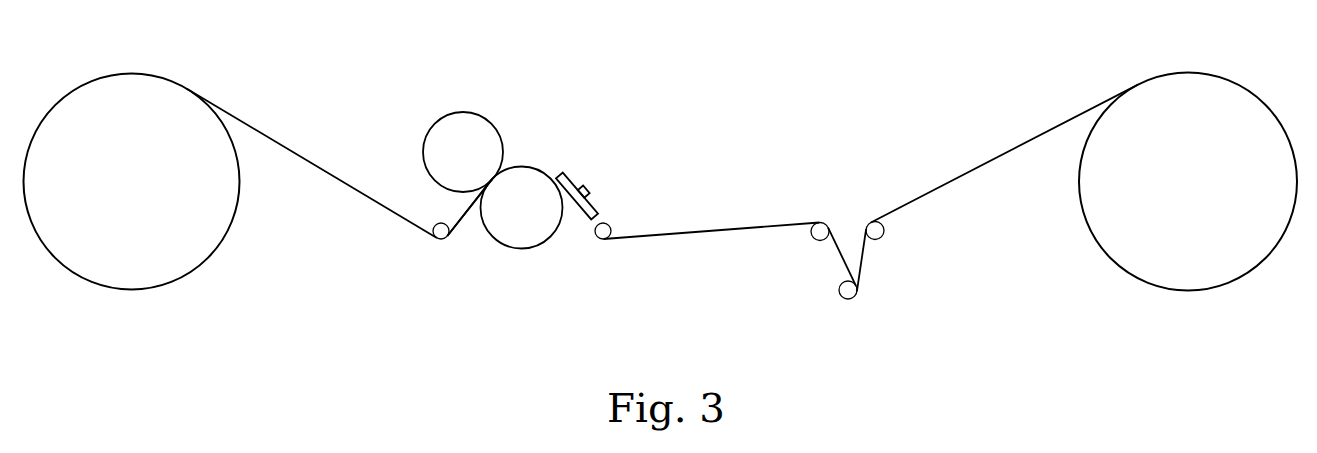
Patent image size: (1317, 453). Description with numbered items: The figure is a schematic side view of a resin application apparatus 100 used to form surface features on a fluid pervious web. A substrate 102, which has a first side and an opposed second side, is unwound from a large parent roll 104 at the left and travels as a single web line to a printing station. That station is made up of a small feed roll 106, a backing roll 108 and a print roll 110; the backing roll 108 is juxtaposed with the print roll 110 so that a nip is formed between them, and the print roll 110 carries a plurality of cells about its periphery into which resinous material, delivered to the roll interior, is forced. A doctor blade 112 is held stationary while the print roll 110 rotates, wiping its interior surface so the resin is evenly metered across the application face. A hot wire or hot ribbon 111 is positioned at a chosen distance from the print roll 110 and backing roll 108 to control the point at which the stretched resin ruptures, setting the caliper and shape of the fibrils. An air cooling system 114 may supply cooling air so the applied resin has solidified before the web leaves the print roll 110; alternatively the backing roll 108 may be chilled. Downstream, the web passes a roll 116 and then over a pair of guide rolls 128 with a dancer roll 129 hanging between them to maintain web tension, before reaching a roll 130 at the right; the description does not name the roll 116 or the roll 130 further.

The resin application apparatus 100 is at (875, 84).
The substrate 102 is at (305, 157).
The parent roll 104 is at (172, 270).
The feed roll 106 is at (440, 240).
The backing roll 108 is at (515, 242).
The print roll 110 is at (470, 120).
The hot wire/hot ribbon 111 is at (505, 168).
The doctor blade 112 is at (488, 174).
The air cooling system 114 is at (590, 187).
The guide roller 116 is at (600, 241).
The guide rolls 128 is at (815, 242).
The dancer roll 129 is at (848, 300).
The take-up roll 130 is at (1142, 268).